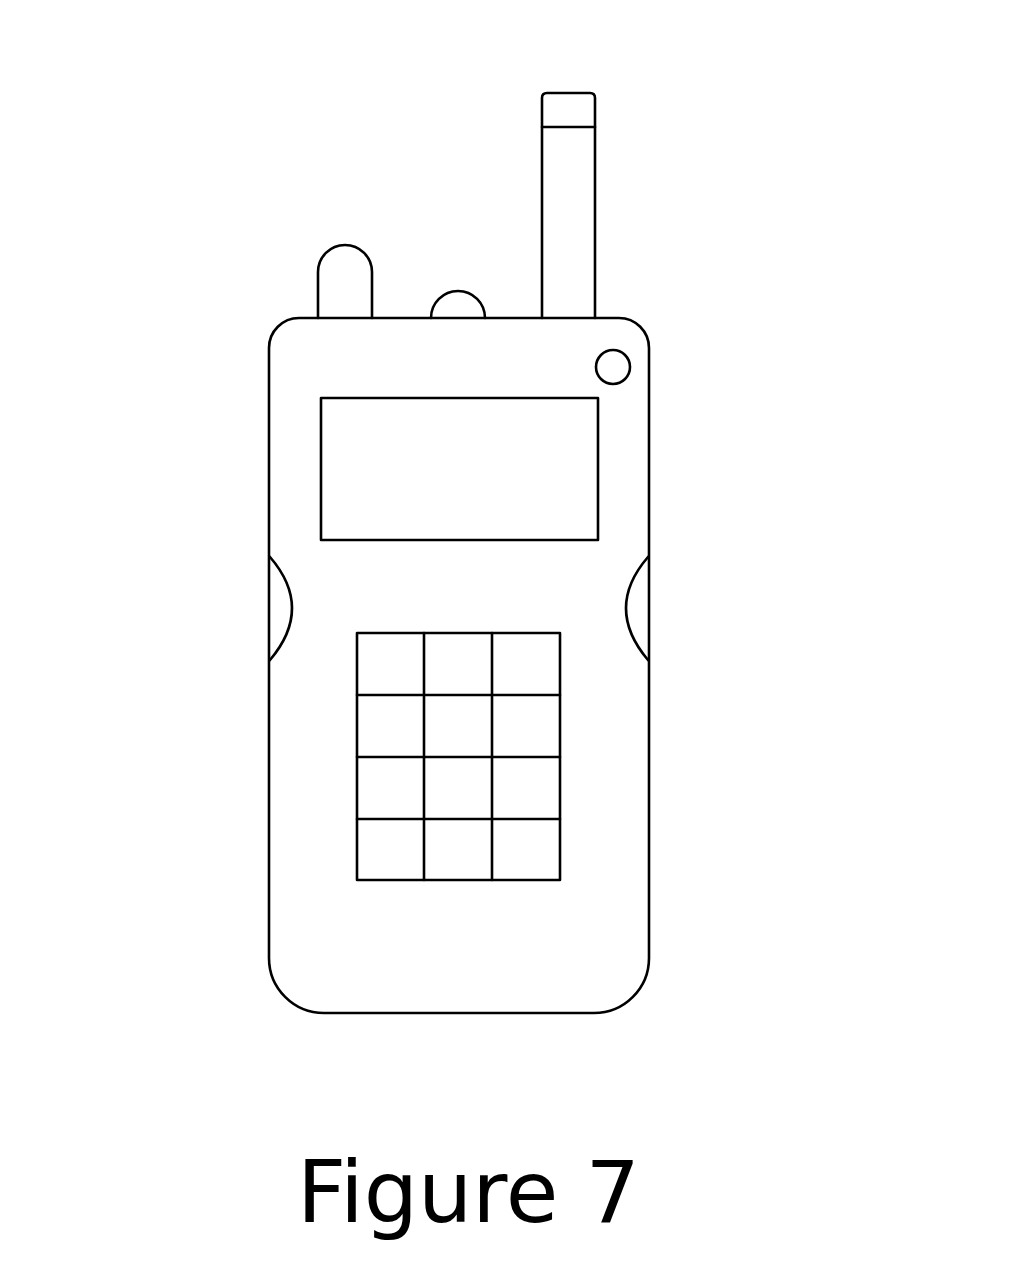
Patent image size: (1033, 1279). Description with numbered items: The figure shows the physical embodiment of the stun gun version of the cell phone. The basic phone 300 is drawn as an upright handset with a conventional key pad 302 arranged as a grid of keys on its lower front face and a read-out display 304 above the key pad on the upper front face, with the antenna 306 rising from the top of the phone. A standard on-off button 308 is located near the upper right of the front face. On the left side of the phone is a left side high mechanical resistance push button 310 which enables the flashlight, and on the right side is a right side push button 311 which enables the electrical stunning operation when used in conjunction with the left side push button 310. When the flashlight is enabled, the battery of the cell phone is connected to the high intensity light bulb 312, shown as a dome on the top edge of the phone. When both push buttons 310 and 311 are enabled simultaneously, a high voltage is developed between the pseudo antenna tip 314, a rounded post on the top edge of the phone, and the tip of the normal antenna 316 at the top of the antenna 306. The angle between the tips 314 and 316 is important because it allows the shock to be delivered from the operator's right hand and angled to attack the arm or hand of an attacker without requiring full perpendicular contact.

The basic phone 300 is at (362, 665).
The key pad 302 is at (312, 758).
The read-out display 304 is at (347, 465).
The antenna 306 is at (700, 205).
The on-off button 308 is at (717, 339).
The left side high resistance push button 310 is at (188, 605).
The right side push button 311 is at (741, 592).
The high intensity light bulb 312 is at (359, 182).
The pseudo antenna tip 314 is at (254, 234).
The tip of the normal antenna 316 is at (675, 76).